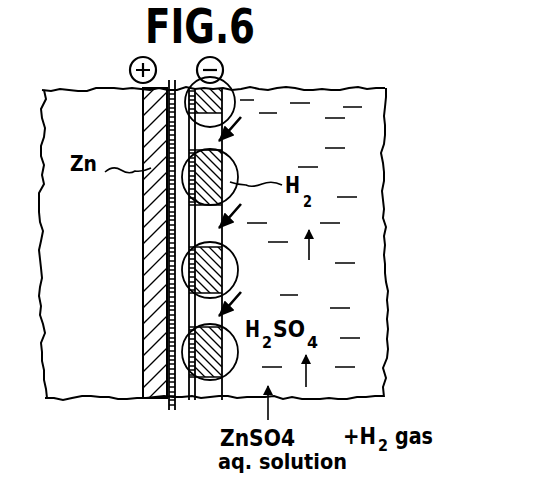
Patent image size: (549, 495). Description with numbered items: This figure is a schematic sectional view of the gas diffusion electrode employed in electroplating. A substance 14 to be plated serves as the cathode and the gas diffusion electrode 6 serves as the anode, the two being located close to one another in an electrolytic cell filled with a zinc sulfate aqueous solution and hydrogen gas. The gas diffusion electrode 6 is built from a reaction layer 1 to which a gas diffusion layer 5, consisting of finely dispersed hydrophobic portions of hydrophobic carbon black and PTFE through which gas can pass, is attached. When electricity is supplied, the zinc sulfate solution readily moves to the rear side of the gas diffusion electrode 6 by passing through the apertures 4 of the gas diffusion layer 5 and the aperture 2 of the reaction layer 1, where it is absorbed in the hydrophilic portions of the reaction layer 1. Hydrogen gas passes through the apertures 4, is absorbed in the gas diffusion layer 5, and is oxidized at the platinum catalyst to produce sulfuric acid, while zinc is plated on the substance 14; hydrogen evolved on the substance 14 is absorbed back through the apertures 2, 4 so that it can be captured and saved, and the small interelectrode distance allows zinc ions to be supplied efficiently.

The reaction layer 1 is at (233, 262).
The aperture 2 is at (186, 320).
The apertures 4 is at (232, 118).
The gas diffusion layer 5 is at (233, 164).
The gas diffusion electrode 6 is at (230, 85).
The substance to be plated 14 is at (144, 263).